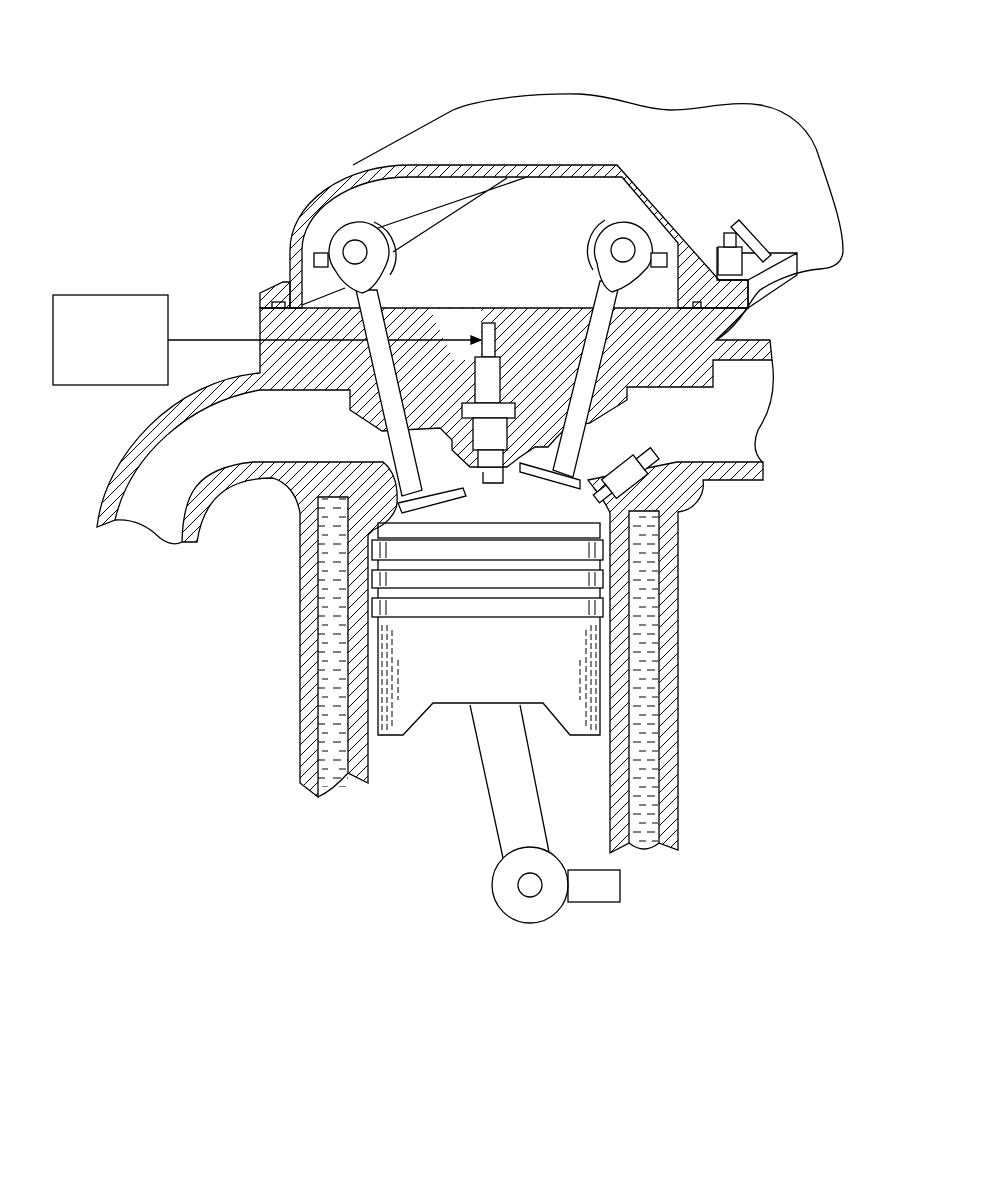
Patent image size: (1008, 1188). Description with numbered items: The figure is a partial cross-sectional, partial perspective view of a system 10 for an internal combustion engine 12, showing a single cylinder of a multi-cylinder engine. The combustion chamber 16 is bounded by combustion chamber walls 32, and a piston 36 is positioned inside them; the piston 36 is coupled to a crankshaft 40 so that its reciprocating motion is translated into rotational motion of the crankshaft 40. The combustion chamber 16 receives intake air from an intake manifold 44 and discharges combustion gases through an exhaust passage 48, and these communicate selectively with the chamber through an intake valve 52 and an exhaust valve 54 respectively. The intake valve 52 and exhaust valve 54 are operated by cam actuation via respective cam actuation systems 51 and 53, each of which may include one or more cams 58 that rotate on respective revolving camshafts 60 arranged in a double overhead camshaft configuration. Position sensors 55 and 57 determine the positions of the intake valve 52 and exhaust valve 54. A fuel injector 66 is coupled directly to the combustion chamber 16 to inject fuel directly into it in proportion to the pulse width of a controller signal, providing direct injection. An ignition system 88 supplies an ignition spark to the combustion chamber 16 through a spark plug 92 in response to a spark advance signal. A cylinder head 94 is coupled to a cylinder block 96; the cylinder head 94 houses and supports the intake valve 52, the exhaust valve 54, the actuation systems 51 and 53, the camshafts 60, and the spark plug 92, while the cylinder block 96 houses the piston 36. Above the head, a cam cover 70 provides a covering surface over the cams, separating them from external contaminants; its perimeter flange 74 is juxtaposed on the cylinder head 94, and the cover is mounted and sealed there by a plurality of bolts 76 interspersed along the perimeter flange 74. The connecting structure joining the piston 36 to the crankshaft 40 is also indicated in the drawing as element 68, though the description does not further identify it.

The system 10 is at (236, 130).
The internal combustion engine 12 is at (767, 90).
The combustion chamber 16 is at (517, 509).
The combustion chamber walls 32 is at (362, 762).
The piston 36 is at (504, 672).
The crankshaft 40 is at (523, 922).
The intake manifold 44 is at (754, 414).
The exhaust passage 48 is at (304, 437).
The cam actuation system 51 is at (632, 195).
The intake valve 52 is at (577, 462).
The cam actuation system 53 is at (337, 210).
The exhaust valve 54 is at (413, 493).
The position sensor 55 is at (662, 262).
The position sensor 57 is at (313, 260).
The cam 58 is at (603, 282).
The camshaft 60 is at (390, 193).
The fuel injector 66 is at (652, 450).
The connecting rod 68 is at (434, 856).
The cam cover 70 is at (422, 127).
The perimeter flange 74 is at (800, 270).
The bolt 76 is at (730, 253).
The ignition system 88 is at (113, 295).
The spark plug 92 is at (500, 358).
The cylinder head 94 is at (713, 337).
The cylinder block 96 is at (280, 498).